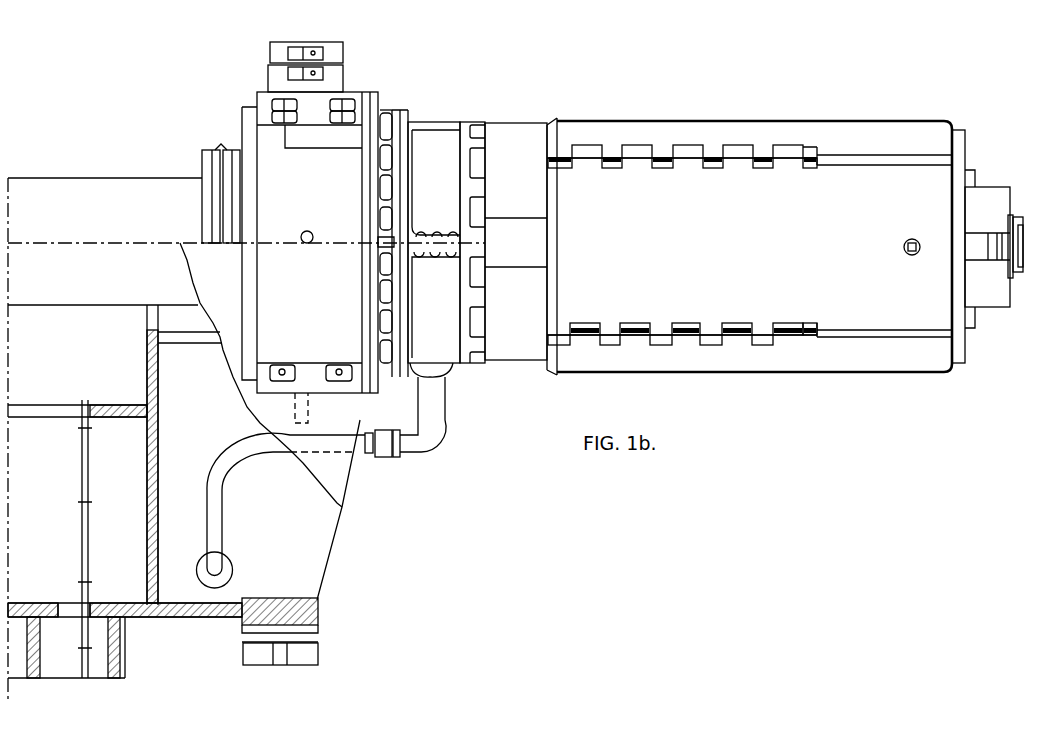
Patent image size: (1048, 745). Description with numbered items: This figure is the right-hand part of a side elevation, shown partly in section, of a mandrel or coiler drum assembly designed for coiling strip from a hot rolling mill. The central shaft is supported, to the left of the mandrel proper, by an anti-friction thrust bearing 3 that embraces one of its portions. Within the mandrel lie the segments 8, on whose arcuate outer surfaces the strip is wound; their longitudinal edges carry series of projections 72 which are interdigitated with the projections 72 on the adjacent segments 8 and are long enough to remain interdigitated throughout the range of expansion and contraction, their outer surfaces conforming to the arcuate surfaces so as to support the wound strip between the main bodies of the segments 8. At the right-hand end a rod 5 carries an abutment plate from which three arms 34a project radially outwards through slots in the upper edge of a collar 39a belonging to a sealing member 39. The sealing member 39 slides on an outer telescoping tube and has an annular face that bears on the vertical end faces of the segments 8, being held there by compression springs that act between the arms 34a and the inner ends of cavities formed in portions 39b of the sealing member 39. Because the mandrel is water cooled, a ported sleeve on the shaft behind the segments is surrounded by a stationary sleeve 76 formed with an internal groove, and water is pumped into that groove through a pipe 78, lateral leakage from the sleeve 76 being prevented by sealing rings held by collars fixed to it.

The anti-friction thrust bearing 3 is at (230, 146).
The rod 5 is at (1018, 226).
The segments 8 is at (728, 127).
The arms 34a is at (1000, 238).
The sealing member 39 is at (958, 353).
The collar 39a is at (987, 294).
The portions of the sealing member 39b is at (973, 244).
The projections 72 is at (611, 152).
The stationary sleeve 76 is at (430, 135).
The pipe 78 is at (433, 394).